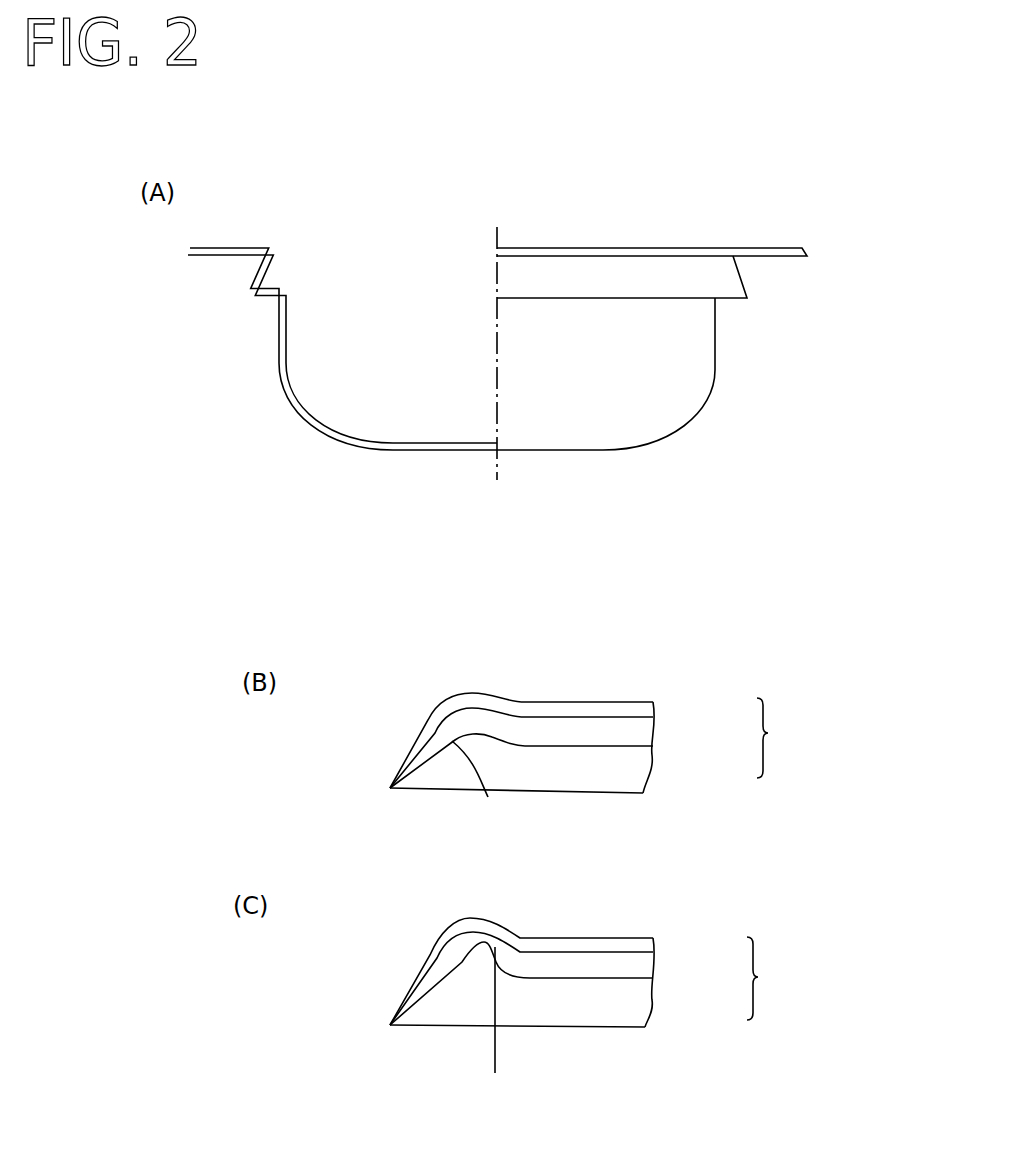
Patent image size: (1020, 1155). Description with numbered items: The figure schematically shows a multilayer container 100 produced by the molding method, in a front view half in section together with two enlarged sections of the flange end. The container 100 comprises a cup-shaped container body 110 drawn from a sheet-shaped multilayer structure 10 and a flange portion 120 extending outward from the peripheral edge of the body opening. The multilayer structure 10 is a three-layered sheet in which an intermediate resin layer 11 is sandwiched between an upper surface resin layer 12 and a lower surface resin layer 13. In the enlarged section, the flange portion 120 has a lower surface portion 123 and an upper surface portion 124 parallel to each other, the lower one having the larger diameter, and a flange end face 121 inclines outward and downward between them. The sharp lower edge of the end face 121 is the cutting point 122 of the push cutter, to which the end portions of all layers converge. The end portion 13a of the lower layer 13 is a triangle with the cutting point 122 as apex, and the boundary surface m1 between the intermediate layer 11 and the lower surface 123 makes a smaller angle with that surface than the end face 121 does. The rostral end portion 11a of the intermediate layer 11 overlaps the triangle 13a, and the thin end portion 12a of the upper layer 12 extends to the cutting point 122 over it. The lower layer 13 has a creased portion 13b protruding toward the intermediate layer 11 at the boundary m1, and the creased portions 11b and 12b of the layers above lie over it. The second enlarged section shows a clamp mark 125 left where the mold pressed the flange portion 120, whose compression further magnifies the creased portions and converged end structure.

The multilayer container 100 is at (540, 625).
The cup-shaped container body 110 is at (715, 370).
The flange portion 120 is at (773, 262).
The multilayer structure 10 is at (777, 859).
The upper surface resin layer 12 is at (653, 703).
The intermediate resin layer 11 is at (653, 732).
The lower surface resin layer 13 is at (643, 768).
The flange end face 121 is at (422, 732).
The cutting point 122 is at (390, 788).
The lower surface portion 123 is at (542, 795).
The upper surface portion 124 is at (627, 698).
The clamp mark 125 is at (520, 937).
The end portion of the upper surface resin layer 12a is at (430, 712).
The creased portion of the upper surface resin layer 12b is at (470, 693).
The end portion of the intermediate resin layer 11a is at (430, 750).
The creased portion of the intermediate resin layer 11b is at (480, 705).
The end portion of the lower surface resin layer 13a is at (447, 772).
The creased portion of the lower surface resin layer 13b is at (490, 732).
The boundary surface m1 is at (488, 786).